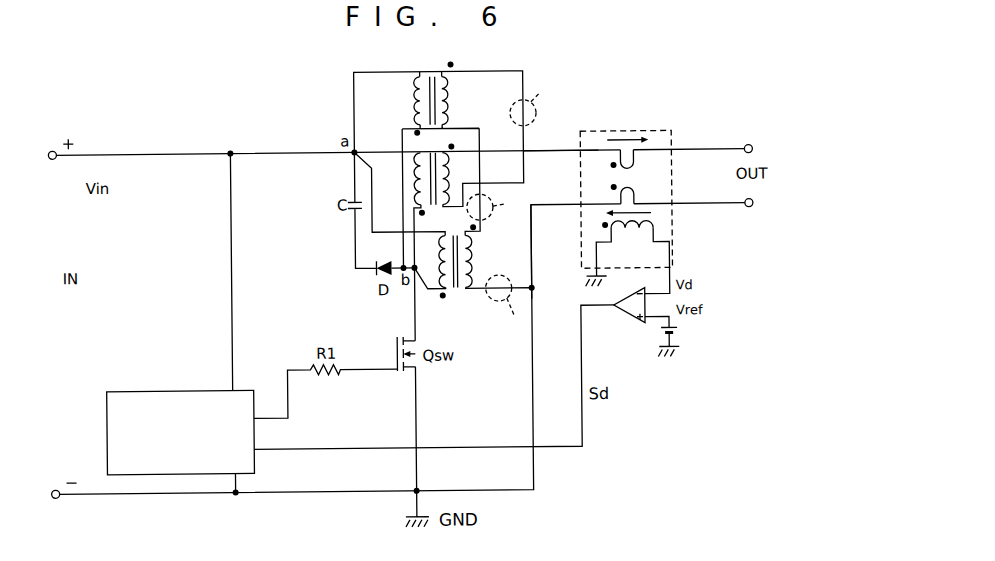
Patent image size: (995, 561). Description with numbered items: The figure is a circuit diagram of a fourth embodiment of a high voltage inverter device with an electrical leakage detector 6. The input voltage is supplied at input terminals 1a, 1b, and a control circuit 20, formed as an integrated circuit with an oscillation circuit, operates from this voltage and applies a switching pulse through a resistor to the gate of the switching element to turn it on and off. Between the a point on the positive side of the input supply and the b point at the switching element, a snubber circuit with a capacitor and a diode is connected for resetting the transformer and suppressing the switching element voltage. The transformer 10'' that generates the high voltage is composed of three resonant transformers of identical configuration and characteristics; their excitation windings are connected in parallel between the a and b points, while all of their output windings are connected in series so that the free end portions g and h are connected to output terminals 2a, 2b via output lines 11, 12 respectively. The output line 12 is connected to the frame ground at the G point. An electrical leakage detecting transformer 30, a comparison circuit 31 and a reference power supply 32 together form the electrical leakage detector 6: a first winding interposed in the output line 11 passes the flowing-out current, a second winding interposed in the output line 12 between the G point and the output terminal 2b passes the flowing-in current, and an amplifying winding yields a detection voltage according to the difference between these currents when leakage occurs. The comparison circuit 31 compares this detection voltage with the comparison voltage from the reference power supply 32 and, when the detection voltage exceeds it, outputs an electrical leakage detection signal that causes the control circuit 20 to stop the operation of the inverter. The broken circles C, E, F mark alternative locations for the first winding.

The input terminal 1a is at (54, 148).
The input terminal 1b is at (54, 487).
The output terminal 2a is at (750, 148).
The output terminal 2b is at (750, 211).
The electrical leakage detector 6 is at (666, 363).
The transformer 10'' is at (454, 220).
The output line 11 is at (554, 150).
The output line 12 is at (557, 207).
The control circuit 20 is at (170, 389).
The electrical leakage detecting transformer 30 is at (628, 133).
The comparison circuit 31 is at (625, 316).
The reference power supply 32 is at (681, 330).